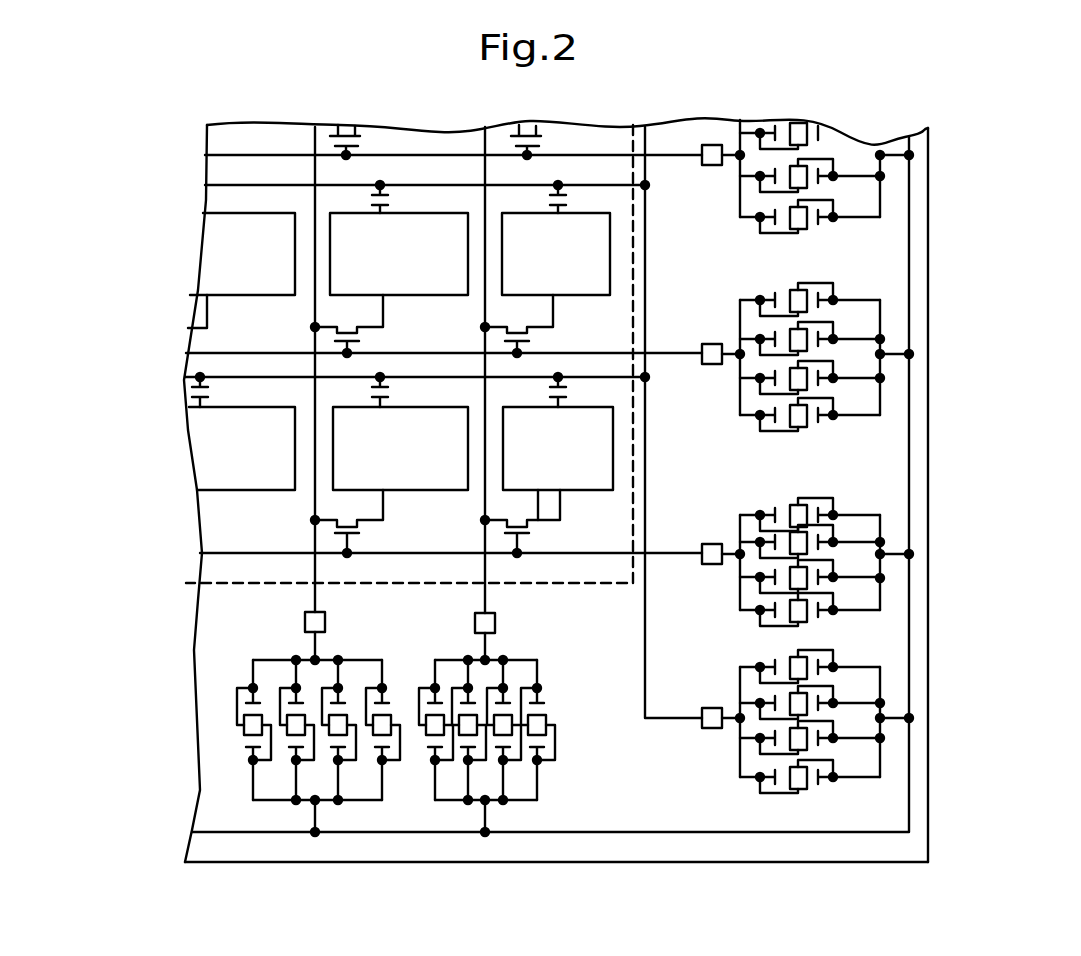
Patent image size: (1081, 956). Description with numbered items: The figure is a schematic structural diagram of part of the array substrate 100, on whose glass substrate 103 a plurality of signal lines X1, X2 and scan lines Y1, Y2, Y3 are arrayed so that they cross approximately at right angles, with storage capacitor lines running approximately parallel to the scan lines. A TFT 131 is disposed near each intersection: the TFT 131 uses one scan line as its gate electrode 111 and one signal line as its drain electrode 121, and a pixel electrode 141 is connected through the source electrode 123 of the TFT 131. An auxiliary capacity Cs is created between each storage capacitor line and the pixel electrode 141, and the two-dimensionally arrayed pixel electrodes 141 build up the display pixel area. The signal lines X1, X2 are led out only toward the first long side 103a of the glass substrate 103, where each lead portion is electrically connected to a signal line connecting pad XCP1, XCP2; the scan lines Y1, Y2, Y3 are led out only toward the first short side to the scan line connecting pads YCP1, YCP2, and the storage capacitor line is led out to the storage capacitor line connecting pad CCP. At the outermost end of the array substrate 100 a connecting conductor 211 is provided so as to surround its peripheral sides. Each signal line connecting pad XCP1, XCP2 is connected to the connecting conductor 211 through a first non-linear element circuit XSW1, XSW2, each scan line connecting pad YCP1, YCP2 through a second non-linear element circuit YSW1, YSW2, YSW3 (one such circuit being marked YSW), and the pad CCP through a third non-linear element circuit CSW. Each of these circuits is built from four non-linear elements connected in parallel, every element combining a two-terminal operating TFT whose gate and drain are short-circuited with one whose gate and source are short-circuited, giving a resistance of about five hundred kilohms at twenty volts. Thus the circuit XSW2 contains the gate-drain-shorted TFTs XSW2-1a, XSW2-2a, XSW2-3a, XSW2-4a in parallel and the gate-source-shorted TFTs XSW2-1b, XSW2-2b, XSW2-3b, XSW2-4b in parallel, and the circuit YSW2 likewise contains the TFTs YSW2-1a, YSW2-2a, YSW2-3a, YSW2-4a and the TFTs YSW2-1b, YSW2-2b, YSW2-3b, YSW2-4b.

The array substrate 100 is at (593, 499).
The array substrate 103 is at (932, 448).
The first long side 103a is at (682, 862).
The gate electrode 111 is at (409, 355).
The drain electrode 121 is at (510, 502).
The source electrode 123 is at (562, 513).
The TFT 131 is at (472, 426).
The pixel electrode 141 is at (546, 246).
The connecting conductor 211 is at (572, 862).
The auxiliary capacity Cs is at (400, 295).
The scan line Y1 is at (451, 554).
The scan line Y2 is at (444, 355).
The scan line Y3 is at (689, 140).
The signal line X1 is at (505, 481).
The signal line X2 is at (337, 481).
The scan line connecting pad YCP1 is at (705, 335).
The scan line connecting pad YCP2 is at (783, 100).
The signal line connecting pad XCP1 is at (525, 635).
The signal line connecting pad XCP2 is at (355, 634).
The storage capacitor line connecting pad CCP is at (710, 741).
The third non-linear element circuit CSW is at (760, 782).
The second non-linear element circuit YSW is at (860, 278).
The second non-linear element circuit YSW1 is at (775, 506).
The second non-linear element circuit YSW2 is at (860, 365).
The second non-linear element circuit YSW3 is at (824, 176).
The two-terminal operating TFT YSW2-1a is at (862, 448).
The two-terminal operating TFT YSW2-2a is at (862, 411).
The two-terminal operating TFT YSW2-3a is at (860, 315).
The two-terminal operating TFT YSW2-4a is at (860, 278).
The two-terminal operating TFT YSW2-1b is at (835, 415).
The two-terminal operating TFT YSW2-2b is at (835, 378).
The two-terminal operating TFT YSW2-3b is at (835, 339).
The two-terminal operating TFT YSW2-4b is at (906, 303).
The first non-linear element circuit XSW1 is at (552, 678).
The first non-linear element circuit XSW2 is at (264, 713).
The two-terminal operating TFT XSW2-1a is at (154, 730).
The two-terminal operating TFT XSW2-2a is at (176, 730).
The two-terminal operating TFT XSW2-3a is at (197, 730).
The two-terminal operating TFT XSW2-4a is at (269, 712).
The two-terminal operating TFT XSW2-1b is at (271, 735).
The two-terminal operating TFT XSW2-2b is at (314, 755).
The two-terminal operating TFT XSW2-3b is at (355, 760).
The two-terminal operating TFT XSW2-4b is at (400, 765).